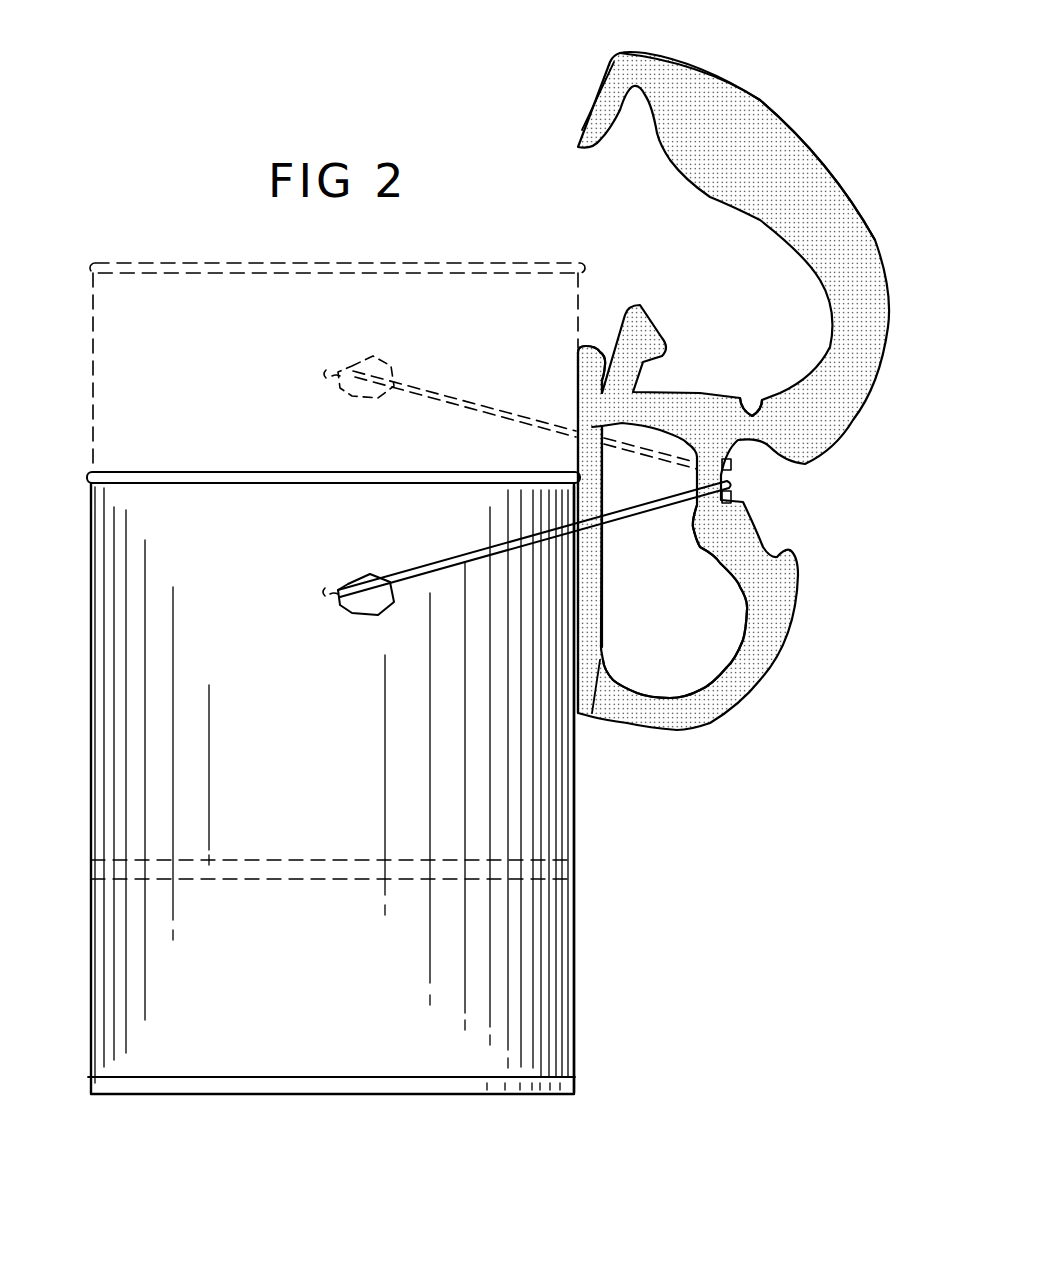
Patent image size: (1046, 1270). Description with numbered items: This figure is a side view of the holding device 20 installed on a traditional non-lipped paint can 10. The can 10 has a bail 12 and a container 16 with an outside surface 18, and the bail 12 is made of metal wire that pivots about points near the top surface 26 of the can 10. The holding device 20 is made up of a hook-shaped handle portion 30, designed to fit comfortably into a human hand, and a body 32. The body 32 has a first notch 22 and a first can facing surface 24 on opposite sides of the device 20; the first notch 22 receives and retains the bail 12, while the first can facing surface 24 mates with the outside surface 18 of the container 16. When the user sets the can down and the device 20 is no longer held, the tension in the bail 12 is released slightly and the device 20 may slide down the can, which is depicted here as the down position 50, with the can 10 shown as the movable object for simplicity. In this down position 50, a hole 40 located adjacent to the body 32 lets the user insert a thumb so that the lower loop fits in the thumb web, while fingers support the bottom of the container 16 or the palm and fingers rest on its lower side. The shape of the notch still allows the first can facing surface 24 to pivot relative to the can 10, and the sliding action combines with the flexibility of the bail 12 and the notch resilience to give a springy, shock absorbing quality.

The paint can 10 is at (80, 578).
The bail 12 is at (418, 572).
The container 16 is at (338, 794).
The outside surface 18 is at (575, 800).
The holding device 20 is at (766, 68).
The first notch 22 is at (743, 484).
The first can facing surface 24 is at (570, 380).
The top surface 26 is at (258, 472).
The handle portion 30 is at (723, 145).
The body 32 is at (727, 416).
The hole 40 is at (673, 623).
The down position 50 is at (72, 300).